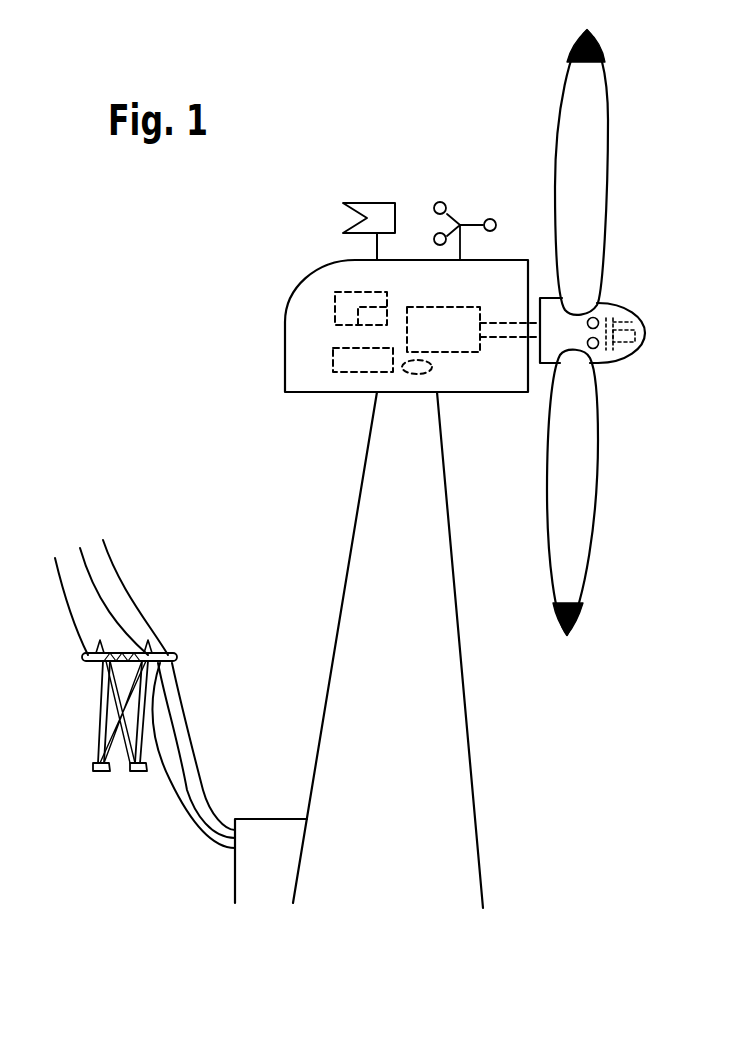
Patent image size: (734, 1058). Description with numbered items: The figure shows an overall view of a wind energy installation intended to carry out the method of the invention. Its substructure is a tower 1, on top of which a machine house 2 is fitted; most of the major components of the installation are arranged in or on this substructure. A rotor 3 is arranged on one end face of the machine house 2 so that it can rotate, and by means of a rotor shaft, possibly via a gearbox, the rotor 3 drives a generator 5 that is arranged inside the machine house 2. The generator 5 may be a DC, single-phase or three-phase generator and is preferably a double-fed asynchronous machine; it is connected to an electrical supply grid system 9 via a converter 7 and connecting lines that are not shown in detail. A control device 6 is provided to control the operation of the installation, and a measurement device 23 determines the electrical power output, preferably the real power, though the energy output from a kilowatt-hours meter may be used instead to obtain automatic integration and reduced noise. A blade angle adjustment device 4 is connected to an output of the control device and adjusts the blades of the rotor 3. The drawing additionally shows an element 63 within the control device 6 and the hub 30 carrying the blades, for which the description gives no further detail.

The tower 1 is at (350, 556).
The machine house 2 is at (298, 328).
The rotor 3 is at (618, 332).
The blade angle adjustment device 4 is at (633, 332).
The generator 5 is at (465, 343).
The control device 6 is at (320, 274).
The data memory 63 is at (373, 313).
The converter 7 is at (342, 367).
The electrical supply grid system 9 is at (127, 583).
The measurement device 23 is at (422, 368).
The hub 30 is at (627, 357).